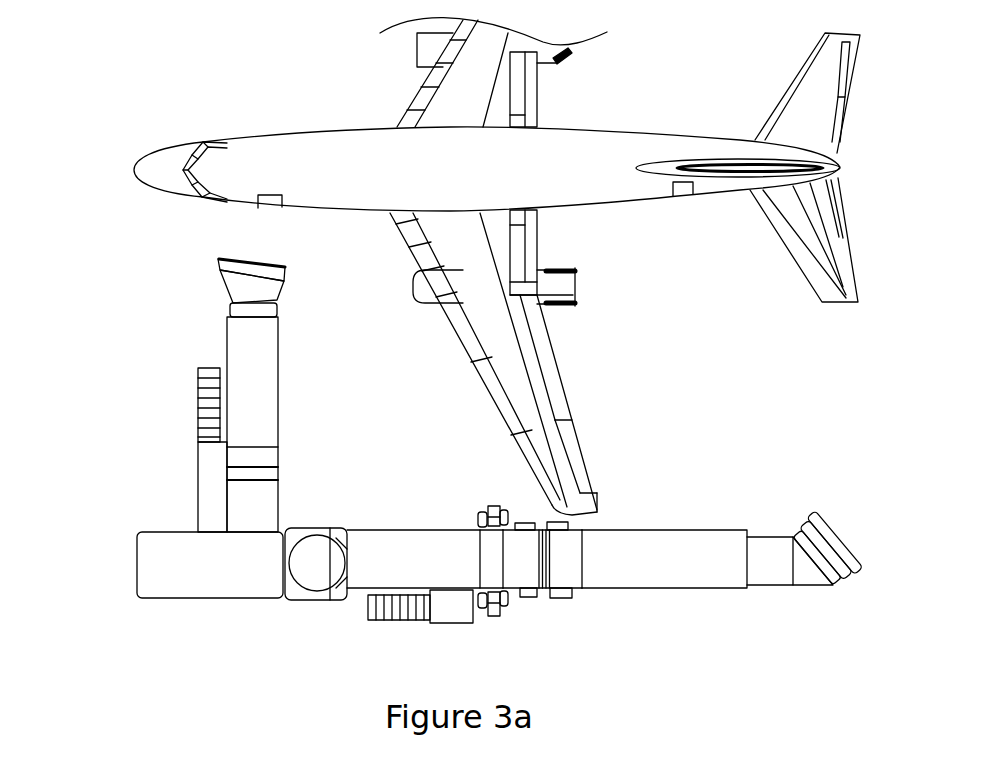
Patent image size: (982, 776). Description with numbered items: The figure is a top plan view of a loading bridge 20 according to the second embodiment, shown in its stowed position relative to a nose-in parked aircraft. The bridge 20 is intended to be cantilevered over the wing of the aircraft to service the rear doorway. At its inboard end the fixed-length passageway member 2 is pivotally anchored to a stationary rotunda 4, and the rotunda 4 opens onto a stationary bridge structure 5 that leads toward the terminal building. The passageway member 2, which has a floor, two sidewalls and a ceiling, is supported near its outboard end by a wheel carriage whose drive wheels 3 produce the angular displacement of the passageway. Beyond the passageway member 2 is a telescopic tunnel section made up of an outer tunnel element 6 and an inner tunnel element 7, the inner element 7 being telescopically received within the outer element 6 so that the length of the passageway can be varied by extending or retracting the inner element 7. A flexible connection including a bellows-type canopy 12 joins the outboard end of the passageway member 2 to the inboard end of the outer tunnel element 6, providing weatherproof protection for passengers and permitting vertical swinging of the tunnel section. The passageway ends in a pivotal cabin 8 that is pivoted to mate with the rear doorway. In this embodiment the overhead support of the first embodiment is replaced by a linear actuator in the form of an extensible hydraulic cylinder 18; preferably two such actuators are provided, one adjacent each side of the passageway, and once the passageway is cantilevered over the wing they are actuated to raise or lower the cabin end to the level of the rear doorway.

The fixed-length passageway member 2 is at (360, 533).
The drive wheels 3 is at (487, 505).
The stationary rotunda 4 is at (320, 600).
The stationary bridge structure 5 is at (122, 447).
The outer tunnel element 6 is at (663, 590).
The inner tunnel element 7 is at (765, 588).
The pivotal cabin 8 is at (810, 517).
The bellows-type canopy 12 is at (547, 593).
The extensible hydraulic cylinder 18 is at (573, 593).
The bridge 20 is at (672, 480).